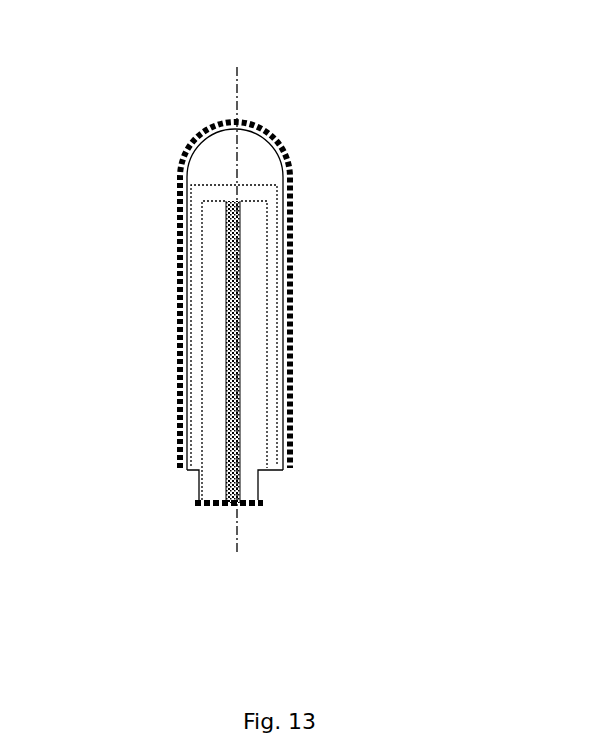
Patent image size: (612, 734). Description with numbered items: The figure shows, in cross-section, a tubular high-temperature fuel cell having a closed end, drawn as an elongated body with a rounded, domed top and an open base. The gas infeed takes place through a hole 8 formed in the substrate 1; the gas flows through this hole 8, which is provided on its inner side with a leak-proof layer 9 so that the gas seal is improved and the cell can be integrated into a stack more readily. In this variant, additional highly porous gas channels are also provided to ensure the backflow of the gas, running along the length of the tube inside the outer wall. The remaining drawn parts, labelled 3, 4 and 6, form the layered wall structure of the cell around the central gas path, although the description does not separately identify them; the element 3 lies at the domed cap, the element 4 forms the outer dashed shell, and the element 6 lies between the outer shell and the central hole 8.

The substrate 1 is at (222, 153).
The cap 3 is at (197, 140).
The outer shell 4 is at (293, 327).
The inner tube 6 is at (270, 245).
The hole 8 is at (238, 200).
The leak-proof layer 9 is at (263, 504).